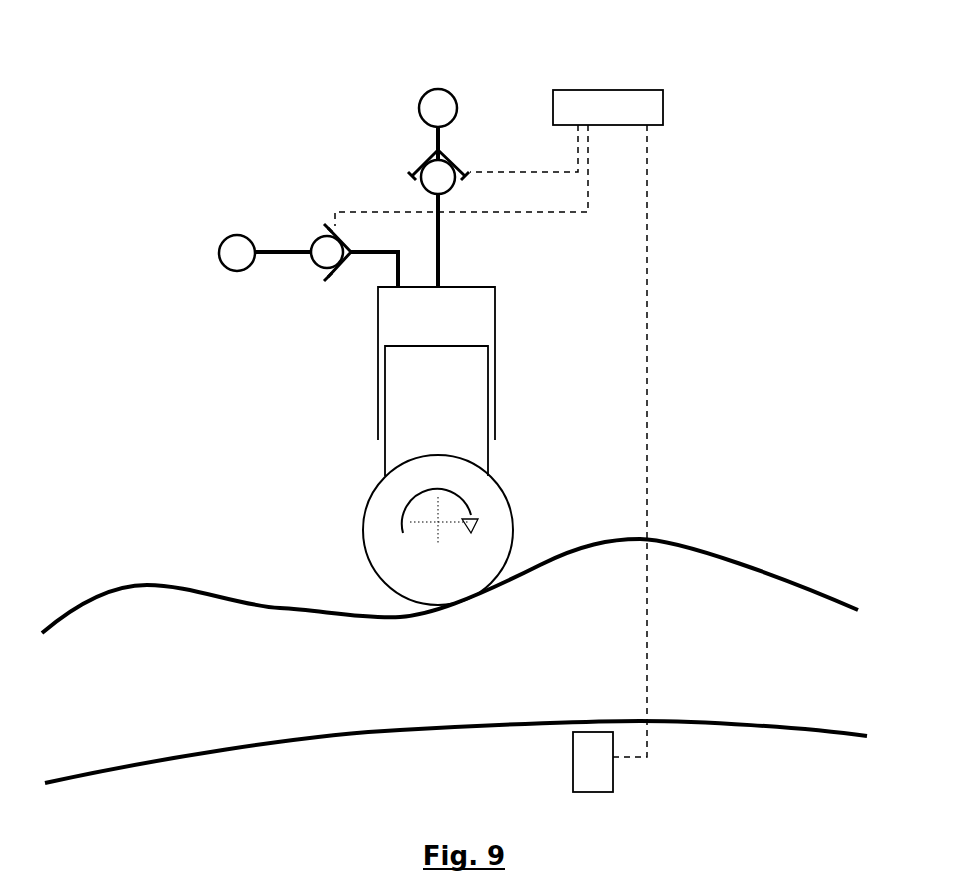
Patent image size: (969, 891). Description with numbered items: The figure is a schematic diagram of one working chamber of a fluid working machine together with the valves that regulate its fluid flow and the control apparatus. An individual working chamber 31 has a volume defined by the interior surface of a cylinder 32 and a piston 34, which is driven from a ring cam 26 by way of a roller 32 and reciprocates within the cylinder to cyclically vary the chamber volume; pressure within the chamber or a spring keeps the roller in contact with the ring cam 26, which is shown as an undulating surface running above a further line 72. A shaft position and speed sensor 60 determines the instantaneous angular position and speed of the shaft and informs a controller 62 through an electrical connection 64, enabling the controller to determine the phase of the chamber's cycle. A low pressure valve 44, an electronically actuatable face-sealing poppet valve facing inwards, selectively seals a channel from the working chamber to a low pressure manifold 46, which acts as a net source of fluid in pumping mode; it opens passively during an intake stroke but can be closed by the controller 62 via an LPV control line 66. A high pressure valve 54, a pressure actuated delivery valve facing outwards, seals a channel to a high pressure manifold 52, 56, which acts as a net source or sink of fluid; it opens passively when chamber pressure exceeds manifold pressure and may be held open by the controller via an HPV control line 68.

The ring cam 26 is at (559, 611).
The working chamber 31 is at (442, 323).
The cylinder 32 is at (380, 312).
The piston 34 is at (451, 416).
The low pressure valve 44 is at (423, 163).
The low pressure manifold 46 is at (442, 104).
The high pressure manifold 52 is at (196, 232).
The high pressure valve 54 is at (310, 240).
The high pressure manifold 56 is at (233, 248).
The shaft position and speed sensor 60 is at (604, 770).
The controller 62 is at (618, 116).
The electrical connection 64 is at (647, 320).
The LPV control line 66 is at (513, 172).
The HPV control line 68 is at (588, 192).
The substrate layer 72 is at (337, 809).